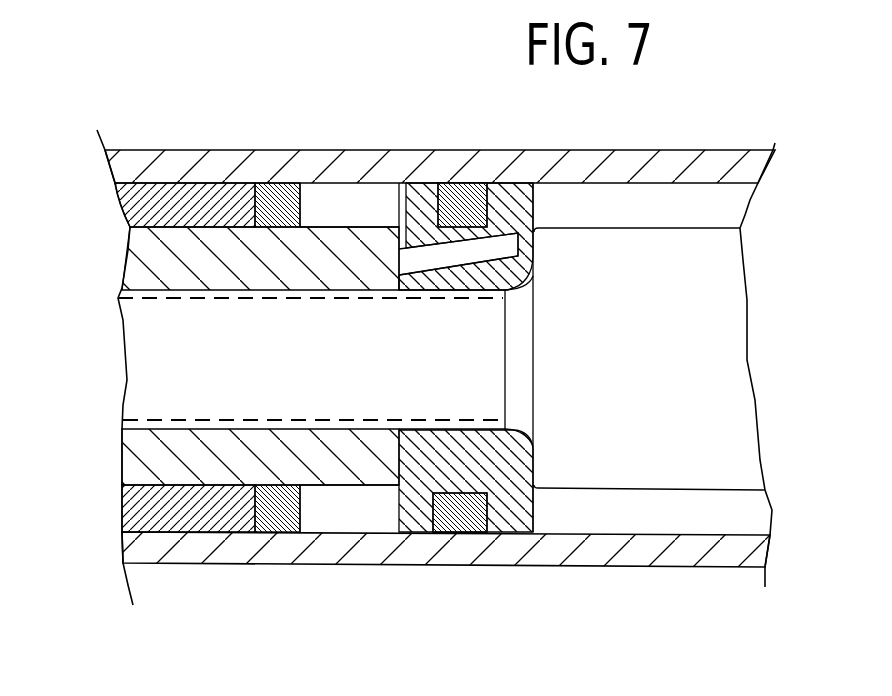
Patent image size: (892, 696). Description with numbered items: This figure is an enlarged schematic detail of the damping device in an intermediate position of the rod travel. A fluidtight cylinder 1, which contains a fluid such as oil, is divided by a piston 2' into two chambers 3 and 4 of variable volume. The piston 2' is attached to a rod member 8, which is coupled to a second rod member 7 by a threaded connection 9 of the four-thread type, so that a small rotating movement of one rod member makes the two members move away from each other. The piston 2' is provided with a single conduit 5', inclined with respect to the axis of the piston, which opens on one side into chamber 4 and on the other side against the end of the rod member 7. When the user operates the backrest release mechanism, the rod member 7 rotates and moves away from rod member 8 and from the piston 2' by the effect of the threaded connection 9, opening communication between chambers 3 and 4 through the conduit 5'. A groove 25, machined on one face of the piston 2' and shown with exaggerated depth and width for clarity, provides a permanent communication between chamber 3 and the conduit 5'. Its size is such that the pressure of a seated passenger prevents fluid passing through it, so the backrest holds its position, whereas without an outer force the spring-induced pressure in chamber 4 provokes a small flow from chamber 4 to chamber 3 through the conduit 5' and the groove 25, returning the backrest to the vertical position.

The cylinder 1 is at (250, 150).
The chamber 3 is at (377, 195).
The groove 25 is at (401, 188).
The conduit 5' is at (495, 183).
The chamber 4 is at (709, 197).
The rod member 7 is at (138, 261).
The threaded connection 9 is at (162, 354).
The rod member 8 is at (724, 383).
The piston 2' is at (466, 527).